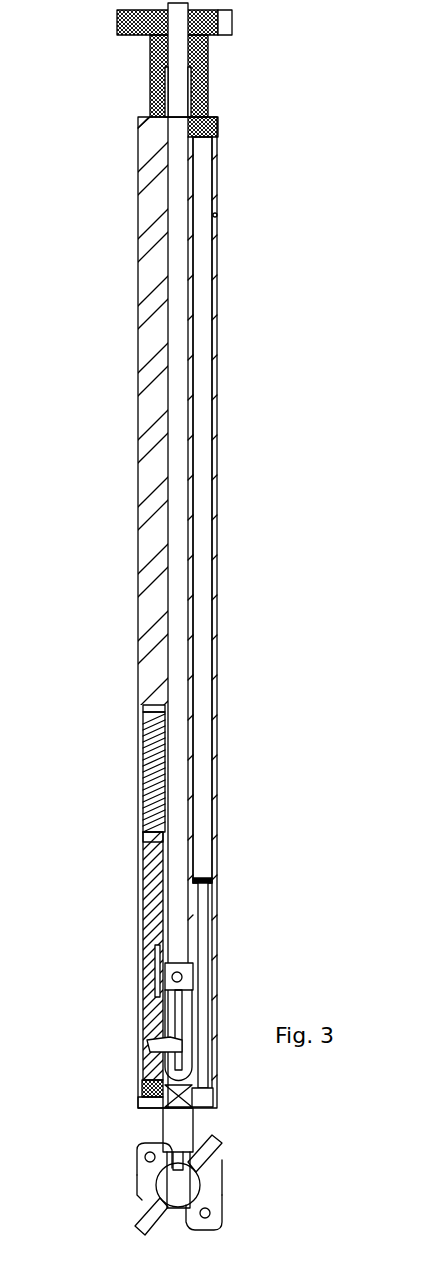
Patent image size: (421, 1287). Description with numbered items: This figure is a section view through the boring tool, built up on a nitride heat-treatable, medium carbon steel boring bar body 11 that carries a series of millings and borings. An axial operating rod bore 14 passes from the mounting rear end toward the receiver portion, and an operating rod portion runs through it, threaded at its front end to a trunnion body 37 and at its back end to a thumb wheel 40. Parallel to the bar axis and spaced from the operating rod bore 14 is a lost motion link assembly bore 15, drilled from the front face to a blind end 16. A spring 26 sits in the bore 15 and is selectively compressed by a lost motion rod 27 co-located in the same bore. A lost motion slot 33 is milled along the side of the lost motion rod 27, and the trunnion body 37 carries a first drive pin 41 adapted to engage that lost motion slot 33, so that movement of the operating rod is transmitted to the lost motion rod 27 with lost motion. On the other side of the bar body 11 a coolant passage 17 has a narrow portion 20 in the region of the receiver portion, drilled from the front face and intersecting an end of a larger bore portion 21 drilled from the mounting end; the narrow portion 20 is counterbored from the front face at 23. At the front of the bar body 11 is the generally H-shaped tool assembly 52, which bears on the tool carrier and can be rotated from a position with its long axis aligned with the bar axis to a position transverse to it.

The thumb wheel 40 is at (222, 21).
The boring bar body 11 is at (146, 477).
The operating rod bore 14 is at (196, 477).
The larger bore portion 21 is at (206, 668).
The blind end 16 is at (148, 711).
The spring 26 is at (148, 748).
The lost motion link assembly bore 15 is at (148, 818).
The lost motion rod 27 is at (150, 893).
The narrow portion 20 is at (211, 905).
The lost motion slot 33 is at (158, 960).
The trunnion body 37 is at (188, 967).
The first drive pin 41 is at (156, 977).
The coolant passage 17 is at (212, 998).
The counterbore 23 is at (219, 1103).
The tool assembly 52 is at (232, 1180).